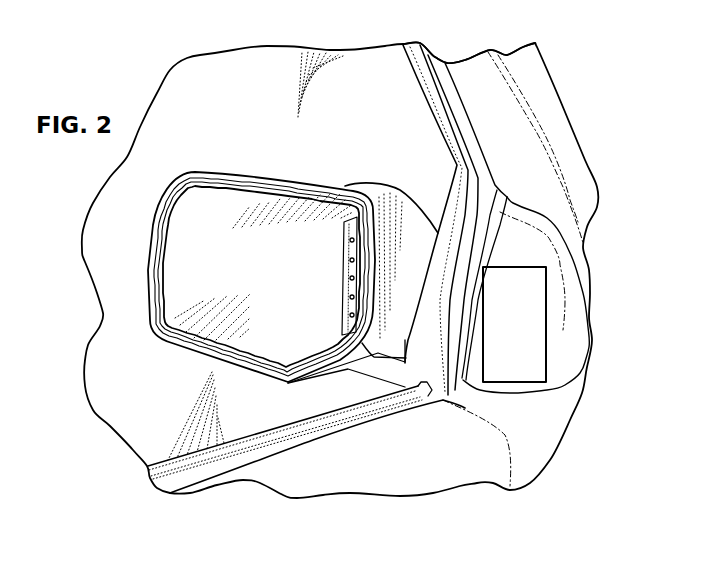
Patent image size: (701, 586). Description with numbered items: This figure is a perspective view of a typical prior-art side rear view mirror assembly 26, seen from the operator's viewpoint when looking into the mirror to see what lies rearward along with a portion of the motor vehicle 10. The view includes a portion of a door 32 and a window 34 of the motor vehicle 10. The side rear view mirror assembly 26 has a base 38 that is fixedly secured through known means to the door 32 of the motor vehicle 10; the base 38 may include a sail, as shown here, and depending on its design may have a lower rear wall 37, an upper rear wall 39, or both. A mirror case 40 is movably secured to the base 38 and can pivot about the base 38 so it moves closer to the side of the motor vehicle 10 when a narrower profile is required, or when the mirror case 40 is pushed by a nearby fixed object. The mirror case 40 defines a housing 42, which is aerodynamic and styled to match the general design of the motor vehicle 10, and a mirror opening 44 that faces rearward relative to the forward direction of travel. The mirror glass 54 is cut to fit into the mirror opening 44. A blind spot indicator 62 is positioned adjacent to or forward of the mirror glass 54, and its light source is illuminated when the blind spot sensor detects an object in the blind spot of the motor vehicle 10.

The motor vehicle 10 is at (556, 91).
The side rear view mirror assembly 26 is at (278, 158).
The door 32 is at (470, 55).
The window 34 is at (84, 218).
The lower rear wall 37 is at (365, 377).
The base 38 is at (447, 182).
The upper rear wall 39 is at (457, 207).
The mirror case 40 is at (373, 178).
The housing 42 is at (200, 167).
The mirror opening 44 is at (167, 260).
The mirror glass 54 is at (268, 267).
The blind spot indicator 62 is at (350, 272).